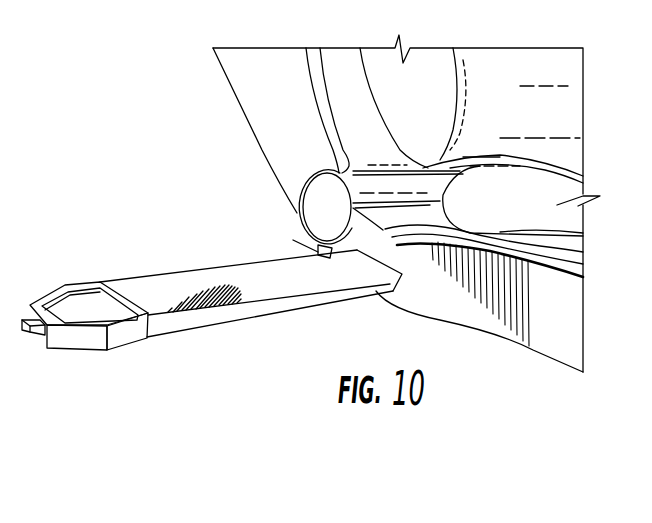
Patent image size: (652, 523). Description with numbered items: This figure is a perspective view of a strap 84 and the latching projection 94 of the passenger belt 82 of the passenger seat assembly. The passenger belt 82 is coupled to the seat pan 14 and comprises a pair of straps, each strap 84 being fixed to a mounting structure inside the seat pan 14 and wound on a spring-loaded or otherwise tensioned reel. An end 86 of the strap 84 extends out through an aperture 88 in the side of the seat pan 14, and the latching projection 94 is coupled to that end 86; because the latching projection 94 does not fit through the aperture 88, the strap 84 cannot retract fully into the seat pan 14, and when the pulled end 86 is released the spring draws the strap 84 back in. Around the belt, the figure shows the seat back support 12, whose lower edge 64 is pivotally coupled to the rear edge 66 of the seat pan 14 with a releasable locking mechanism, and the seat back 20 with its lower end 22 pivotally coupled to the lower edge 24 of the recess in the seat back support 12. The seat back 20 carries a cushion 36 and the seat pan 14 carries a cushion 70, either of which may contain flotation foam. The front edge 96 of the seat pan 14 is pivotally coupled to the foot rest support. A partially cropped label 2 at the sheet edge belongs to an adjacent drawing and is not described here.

The seat back support 12 is at (250, 105).
The seat pan 14 is at (527, 313).
The seat back 20 is at (340, 63).
The lower end 22 is at (568, 150).
The lower edge 24 is at (565, 178).
The cushion 36 is at (480, 63).
The lower edge 64 is at (290, 190).
The rear edge 66 is at (318, 253).
The cushion 70 is at (553, 218).
The passenger belt 82 is at (128, 280).
The strap 84 is at (210, 273).
The end 86 is at (148, 330).
The aperture 88 is at (379, 292).
The latching projection 94 is at (80, 345).
The front edge 96 is at (0, 75).
The device 2 is at (2, 108).